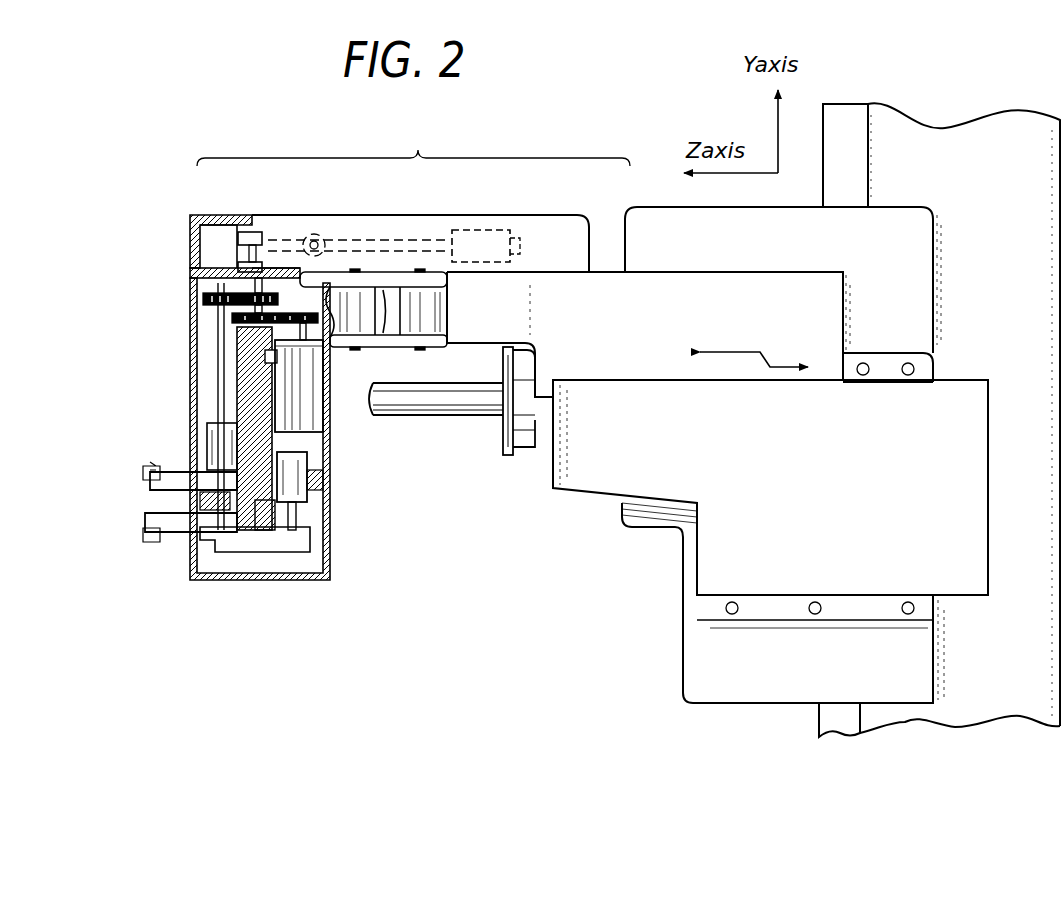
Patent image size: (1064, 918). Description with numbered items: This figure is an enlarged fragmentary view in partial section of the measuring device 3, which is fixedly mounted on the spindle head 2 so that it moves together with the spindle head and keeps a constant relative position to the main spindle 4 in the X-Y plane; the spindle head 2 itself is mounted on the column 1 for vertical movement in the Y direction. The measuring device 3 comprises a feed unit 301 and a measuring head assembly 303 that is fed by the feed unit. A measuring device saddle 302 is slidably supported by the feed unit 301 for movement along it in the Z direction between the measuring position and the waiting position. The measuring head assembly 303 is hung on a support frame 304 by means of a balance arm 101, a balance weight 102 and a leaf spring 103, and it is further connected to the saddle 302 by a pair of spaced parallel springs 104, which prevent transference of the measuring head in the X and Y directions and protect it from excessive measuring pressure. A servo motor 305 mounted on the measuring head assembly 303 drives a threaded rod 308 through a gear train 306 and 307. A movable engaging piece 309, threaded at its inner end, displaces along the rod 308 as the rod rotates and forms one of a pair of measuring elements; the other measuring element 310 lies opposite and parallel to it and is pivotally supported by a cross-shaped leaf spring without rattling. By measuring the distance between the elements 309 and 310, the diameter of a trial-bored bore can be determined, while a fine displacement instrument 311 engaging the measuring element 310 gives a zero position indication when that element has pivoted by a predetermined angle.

The column 1 is at (950, 150).
The spindle head 2 is at (668, 500).
The measuring device 3 is at (413, 145).
The main spindle 4 is at (403, 405).
The balance arm 101 is at (200, 262).
The balance weight 102 is at (489, 230).
The leaf spring 103 is at (228, 214).
The pair of spaced parallel springs 104 is at (386, 335).
The feed unit 301 is at (685, 462).
The measuring device saddle 302 is at (616, 290).
The measuring head assembly 303 is at (176, 380).
The support frame 304 is at (354, 225).
The servo motor 305 is at (322, 425).
The gear train 306 is at (237, 336).
The gear train 307 is at (203, 298).
The threaded rod 308 is at (220, 366).
The movable engaging piece 309 is at (152, 470).
The measuring element 310 is at (150, 532).
The fine displacement instrument 311 is at (323, 490).